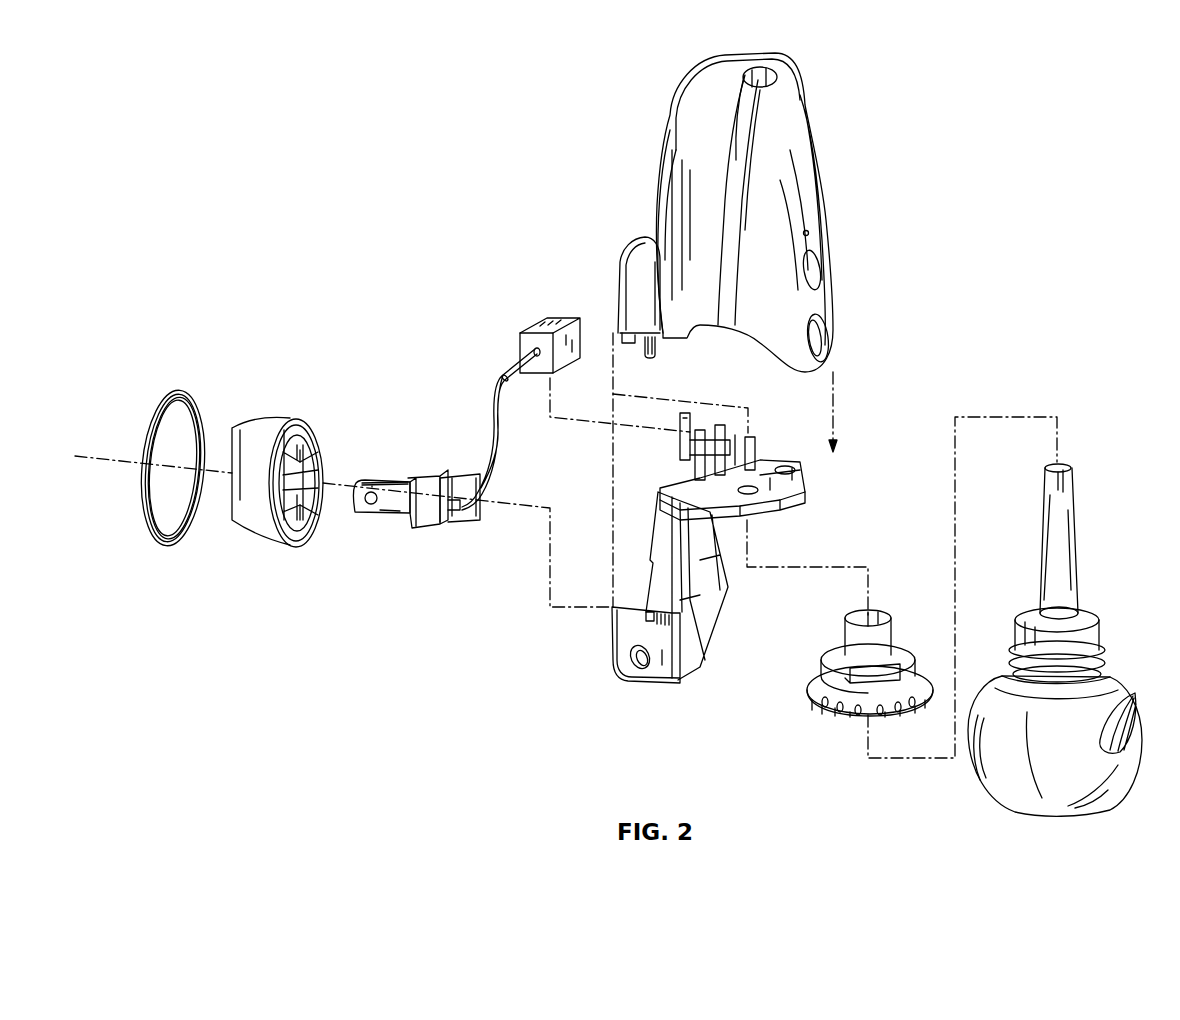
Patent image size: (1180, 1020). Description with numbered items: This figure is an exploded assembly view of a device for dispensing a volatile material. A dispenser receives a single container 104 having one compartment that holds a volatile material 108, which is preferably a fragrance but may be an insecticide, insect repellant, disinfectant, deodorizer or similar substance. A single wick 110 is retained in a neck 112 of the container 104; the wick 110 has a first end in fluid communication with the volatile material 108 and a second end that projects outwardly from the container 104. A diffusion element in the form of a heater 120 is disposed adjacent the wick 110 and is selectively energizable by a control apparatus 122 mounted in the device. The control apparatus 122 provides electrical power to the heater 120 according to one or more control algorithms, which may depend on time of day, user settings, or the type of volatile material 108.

The container 104 is at (1013, 812).
The volatile material 108 is at (1000, 778).
The wick 110 is at (1062, 548).
The neck 112 is at (1100, 642).
The heater 120 is at (525, 352).
The control apparatus 122 is at (455, 488).